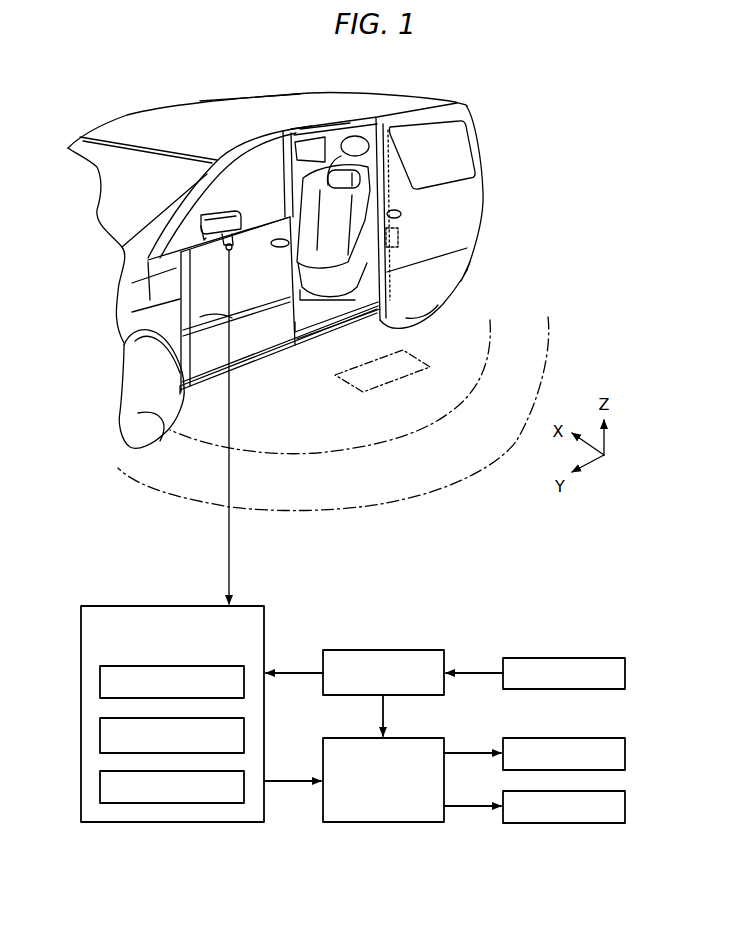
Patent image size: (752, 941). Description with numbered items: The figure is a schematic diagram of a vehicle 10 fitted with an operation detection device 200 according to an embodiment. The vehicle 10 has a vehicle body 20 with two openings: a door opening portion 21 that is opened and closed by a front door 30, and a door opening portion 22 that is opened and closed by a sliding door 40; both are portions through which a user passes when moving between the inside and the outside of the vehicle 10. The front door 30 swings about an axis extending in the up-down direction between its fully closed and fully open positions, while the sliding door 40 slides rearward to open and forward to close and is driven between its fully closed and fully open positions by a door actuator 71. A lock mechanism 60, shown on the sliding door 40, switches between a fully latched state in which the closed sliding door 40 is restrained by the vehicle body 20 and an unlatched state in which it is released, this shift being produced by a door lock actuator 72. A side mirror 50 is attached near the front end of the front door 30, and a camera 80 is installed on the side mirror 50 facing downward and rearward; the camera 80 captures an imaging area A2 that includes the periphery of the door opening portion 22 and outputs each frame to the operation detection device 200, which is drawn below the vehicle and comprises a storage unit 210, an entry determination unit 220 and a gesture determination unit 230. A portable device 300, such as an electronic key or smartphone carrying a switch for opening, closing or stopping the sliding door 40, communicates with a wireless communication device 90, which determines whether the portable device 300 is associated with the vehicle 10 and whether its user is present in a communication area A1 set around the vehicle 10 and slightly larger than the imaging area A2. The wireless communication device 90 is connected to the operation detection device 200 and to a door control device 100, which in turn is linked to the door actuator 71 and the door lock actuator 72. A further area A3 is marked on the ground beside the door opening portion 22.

The vehicle 10 is at (96, 97).
The vehicle body 20 is at (262, 95).
The door opening portion 21 is at (183, 286).
The door opening portion 22 is at (327, 130).
The front door 30 is at (212, 380).
The sliding door 40 is at (480, 200).
The side mirror 50 is at (237, 226).
The lock mechanism 60 is at (400, 238).
The camera 80 is at (235, 247).
The wireless communication device 90 is at (408, 650).
The door control device 100 is at (408, 739).
The operation detection device 200 is at (249, 606).
The storage unit 210 is at (236, 665).
The entry determination unit 220 is at (236, 718).
The gesture determination unit 230 is at (236, 771).
The portable device 300 is at (627, 674).
The door actuator 71 is at (627, 754).
The door lock actuator 72 is at (627, 807).
The communication area A1 is at (468, 480).
The imaging area A2 is at (330, 454).
The third detection area A3 is at (378, 386).